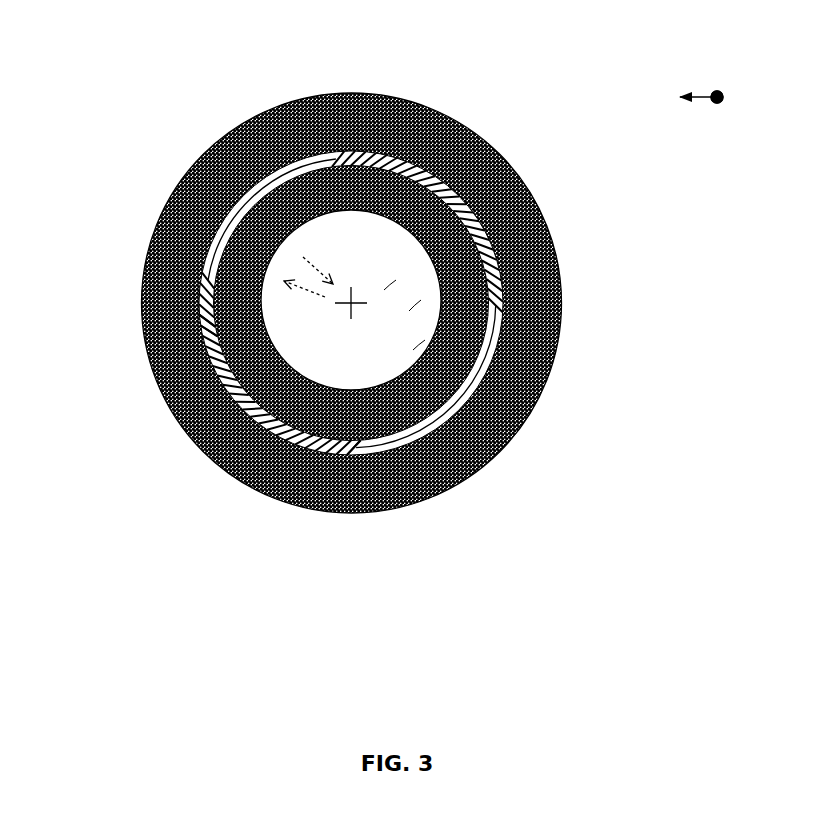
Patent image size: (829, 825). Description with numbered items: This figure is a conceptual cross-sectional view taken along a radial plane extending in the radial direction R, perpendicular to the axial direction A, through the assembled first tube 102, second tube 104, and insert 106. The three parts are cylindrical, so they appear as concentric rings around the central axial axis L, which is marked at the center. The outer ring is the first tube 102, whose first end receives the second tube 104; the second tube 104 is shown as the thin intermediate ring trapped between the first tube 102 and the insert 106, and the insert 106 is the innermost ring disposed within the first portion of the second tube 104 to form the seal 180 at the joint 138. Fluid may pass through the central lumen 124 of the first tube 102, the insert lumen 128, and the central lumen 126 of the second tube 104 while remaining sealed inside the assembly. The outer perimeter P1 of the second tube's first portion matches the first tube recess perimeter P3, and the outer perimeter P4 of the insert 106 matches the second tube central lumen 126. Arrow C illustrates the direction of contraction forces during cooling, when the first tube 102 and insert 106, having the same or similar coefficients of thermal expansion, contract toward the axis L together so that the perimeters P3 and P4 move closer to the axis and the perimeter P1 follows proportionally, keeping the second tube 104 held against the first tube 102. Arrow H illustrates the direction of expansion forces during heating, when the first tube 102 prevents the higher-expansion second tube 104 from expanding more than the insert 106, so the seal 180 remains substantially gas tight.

The first tube 102 is at (331, 120).
The second tube 104 is at (405, 172).
The insert 106 is at (277, 218).
The central lumen of first tube 124 is at (390, 283).
The second tube central lumen 126 is at (415, 300).
The insert lumen 128 is at (419, 343).
The joint 138 is at (125, 200).
The seal 180 is at (130, 155).
The outer perimeter of first portion of second tube P1 is at (198, 331).
The first tube recess perimeter P3 is at (198, 328).
The outer perimeter of insert P4 is at (367, 442).
The central axial axis L is at (355, 311).
The arrow C is at (317, 261).
The arrow H is at (304, 298).
The radial direction R is at (687, 98).
The axial direction A is at (726, 98).